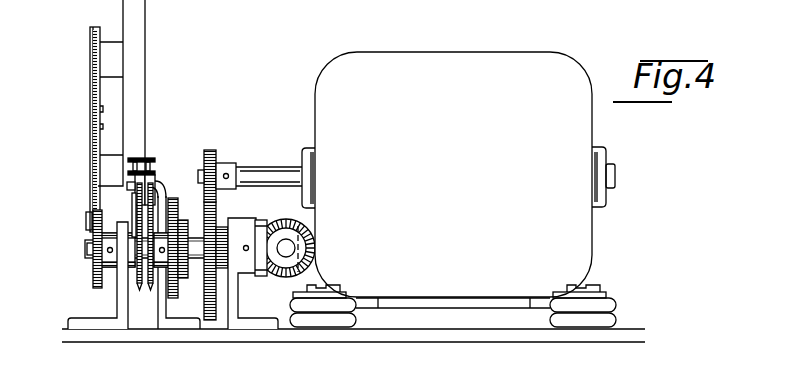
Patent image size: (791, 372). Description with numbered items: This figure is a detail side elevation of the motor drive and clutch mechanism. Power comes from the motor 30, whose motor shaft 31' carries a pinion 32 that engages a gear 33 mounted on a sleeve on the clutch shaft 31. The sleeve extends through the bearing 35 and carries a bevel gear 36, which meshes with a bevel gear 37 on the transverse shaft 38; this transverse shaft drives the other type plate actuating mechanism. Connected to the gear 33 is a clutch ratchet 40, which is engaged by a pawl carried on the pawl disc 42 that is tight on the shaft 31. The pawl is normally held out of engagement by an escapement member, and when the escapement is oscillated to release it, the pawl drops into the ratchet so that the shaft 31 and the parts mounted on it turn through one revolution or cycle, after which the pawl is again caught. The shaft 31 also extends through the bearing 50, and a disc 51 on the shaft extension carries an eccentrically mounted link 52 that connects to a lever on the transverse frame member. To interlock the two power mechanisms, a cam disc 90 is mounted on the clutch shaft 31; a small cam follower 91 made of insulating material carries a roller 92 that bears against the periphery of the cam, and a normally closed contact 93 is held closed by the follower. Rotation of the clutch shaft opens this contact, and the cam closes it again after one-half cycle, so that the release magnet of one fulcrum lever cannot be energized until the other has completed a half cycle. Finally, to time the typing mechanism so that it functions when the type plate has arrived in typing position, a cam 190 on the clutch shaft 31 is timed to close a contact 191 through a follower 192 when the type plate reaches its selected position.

The motor 30 is at (444, 62).
The shaft 31 is at (72, 253).
The motor shaft 31' is at (269, 161).
The pinion 32 is at (212, 150).
The gear 33 is at (218, 212).
The bearing 35 is at (245, 323).
The bevel gear 36 is at (268, 224).
The bevel gear 37 is at (312, 247).
The transverse shaft 38 is at (287, 257).
The clutch ratchet 40 is at (178, 275).
The pawl disc 42 is at (170, 198).
The bearing 50 is at (112, 324).
The disc 51 is at (93, 274).
The link 52 is at (92, 192).
The cam disc 90 is at (139, 284).
The cam follower 91 is at (134, 184).
The roller 92 is at (143, 203).
The contact 93 is at (140, 157).
The cam 190 is at (155, 320).
The contact 191 is at (148, 180).
The follower 192 is at (156, 198).